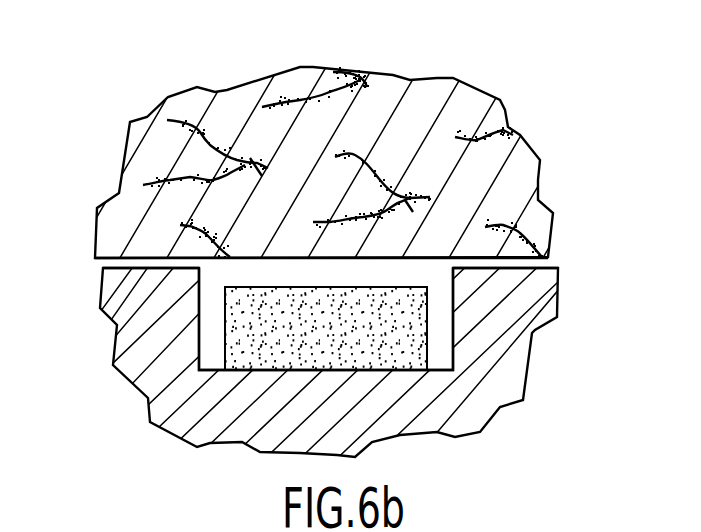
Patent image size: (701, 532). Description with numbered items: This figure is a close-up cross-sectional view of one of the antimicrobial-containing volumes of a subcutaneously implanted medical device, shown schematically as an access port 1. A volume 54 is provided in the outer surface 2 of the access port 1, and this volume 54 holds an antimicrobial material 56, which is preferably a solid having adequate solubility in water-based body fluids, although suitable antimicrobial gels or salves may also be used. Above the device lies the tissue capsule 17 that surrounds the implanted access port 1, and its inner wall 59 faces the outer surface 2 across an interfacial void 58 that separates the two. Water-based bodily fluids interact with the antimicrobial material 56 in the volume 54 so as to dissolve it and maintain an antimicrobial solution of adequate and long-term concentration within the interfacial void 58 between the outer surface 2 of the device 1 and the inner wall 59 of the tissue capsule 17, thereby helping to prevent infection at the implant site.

The tissue capsule 17 is at (397, 92).
The access port 1 is at (143, 388).
The outer surface 2 is at (148, 268).
The volume 54 is at (439, 305).
The antimicrobial material 56 is at (407, 333).
The interfacial void 58 is at (542, 263).
The inner wall 59 is at (150, 258).